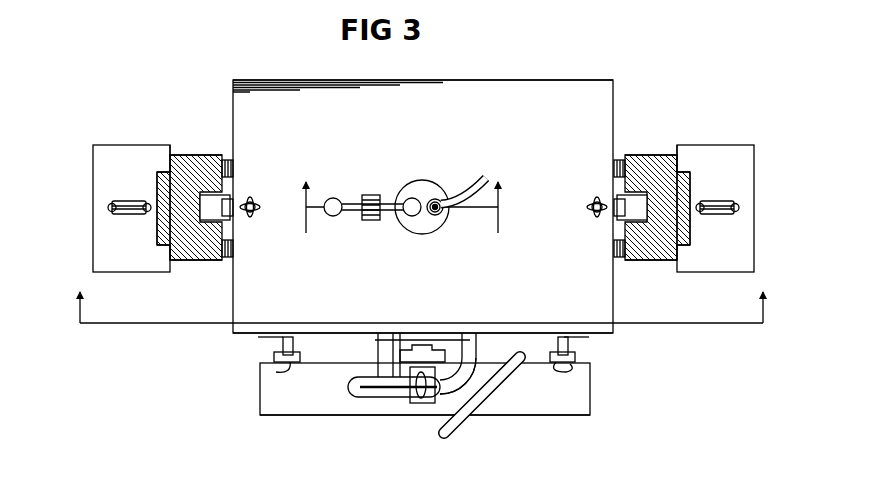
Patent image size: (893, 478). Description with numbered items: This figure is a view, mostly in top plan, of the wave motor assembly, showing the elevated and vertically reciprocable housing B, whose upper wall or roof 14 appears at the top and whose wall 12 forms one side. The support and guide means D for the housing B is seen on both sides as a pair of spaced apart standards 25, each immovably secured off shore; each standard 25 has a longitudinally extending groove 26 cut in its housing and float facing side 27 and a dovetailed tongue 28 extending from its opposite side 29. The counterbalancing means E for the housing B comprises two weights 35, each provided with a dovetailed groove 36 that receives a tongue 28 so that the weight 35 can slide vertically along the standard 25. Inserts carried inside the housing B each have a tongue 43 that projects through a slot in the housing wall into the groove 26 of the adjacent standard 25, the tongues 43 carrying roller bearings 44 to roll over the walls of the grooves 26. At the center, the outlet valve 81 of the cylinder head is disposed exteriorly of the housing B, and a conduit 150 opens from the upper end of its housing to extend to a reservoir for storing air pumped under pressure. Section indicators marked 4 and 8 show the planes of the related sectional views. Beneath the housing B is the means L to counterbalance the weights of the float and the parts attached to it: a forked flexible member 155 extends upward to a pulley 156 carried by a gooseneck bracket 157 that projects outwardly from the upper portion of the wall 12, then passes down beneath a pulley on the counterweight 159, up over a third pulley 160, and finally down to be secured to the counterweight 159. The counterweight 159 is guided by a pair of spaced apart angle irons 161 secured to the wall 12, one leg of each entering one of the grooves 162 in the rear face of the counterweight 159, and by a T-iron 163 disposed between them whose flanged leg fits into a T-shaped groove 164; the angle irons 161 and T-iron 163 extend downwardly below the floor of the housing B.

The housing B is at (626, 92).
The upper wall or roof 14 is at (590, 96).
The section line 4- 4 is at (420, 321).
The section line 8- 8 is at (401, 221).
The counterbalancing means E is at (130, 134).
The support and guide means D is at (196, 150).
The standard 25 is at (192, 258).
The groove 26 is at (197, 222).
The housing and float facing side 27 is at (222, 258).
The tongue 28 is at (163, 183).
The opposite side 29 is at (167, 162).
The weight 35 is at (105, 203).
The dovetailed groove 36 is at (167, 242).
The tongue 43 is at (222, 205).
The roller bearings 44 is at (222, 224).
The outlet valve 81 is at (446, 215).
The conduit 150 is at (466, 185).
The wall 12 is at (250, 338).
The counterweight 159 is at (585, 392).
The counterbalancing means L is at (596, 418).
The angle irons 161 is at (292, 345).
The grooves 162 is at (283, 355).
The T-iron 163 is at (476, 345).
The T-shaped groove 164 is at (420, 355).
The third pulley 160 is at (365, 395).
The forked flexible member 155 is at (390, 385).
The pulley 156 is at (455, 428).
The gooseneck bracket 157 is at (470, 378).